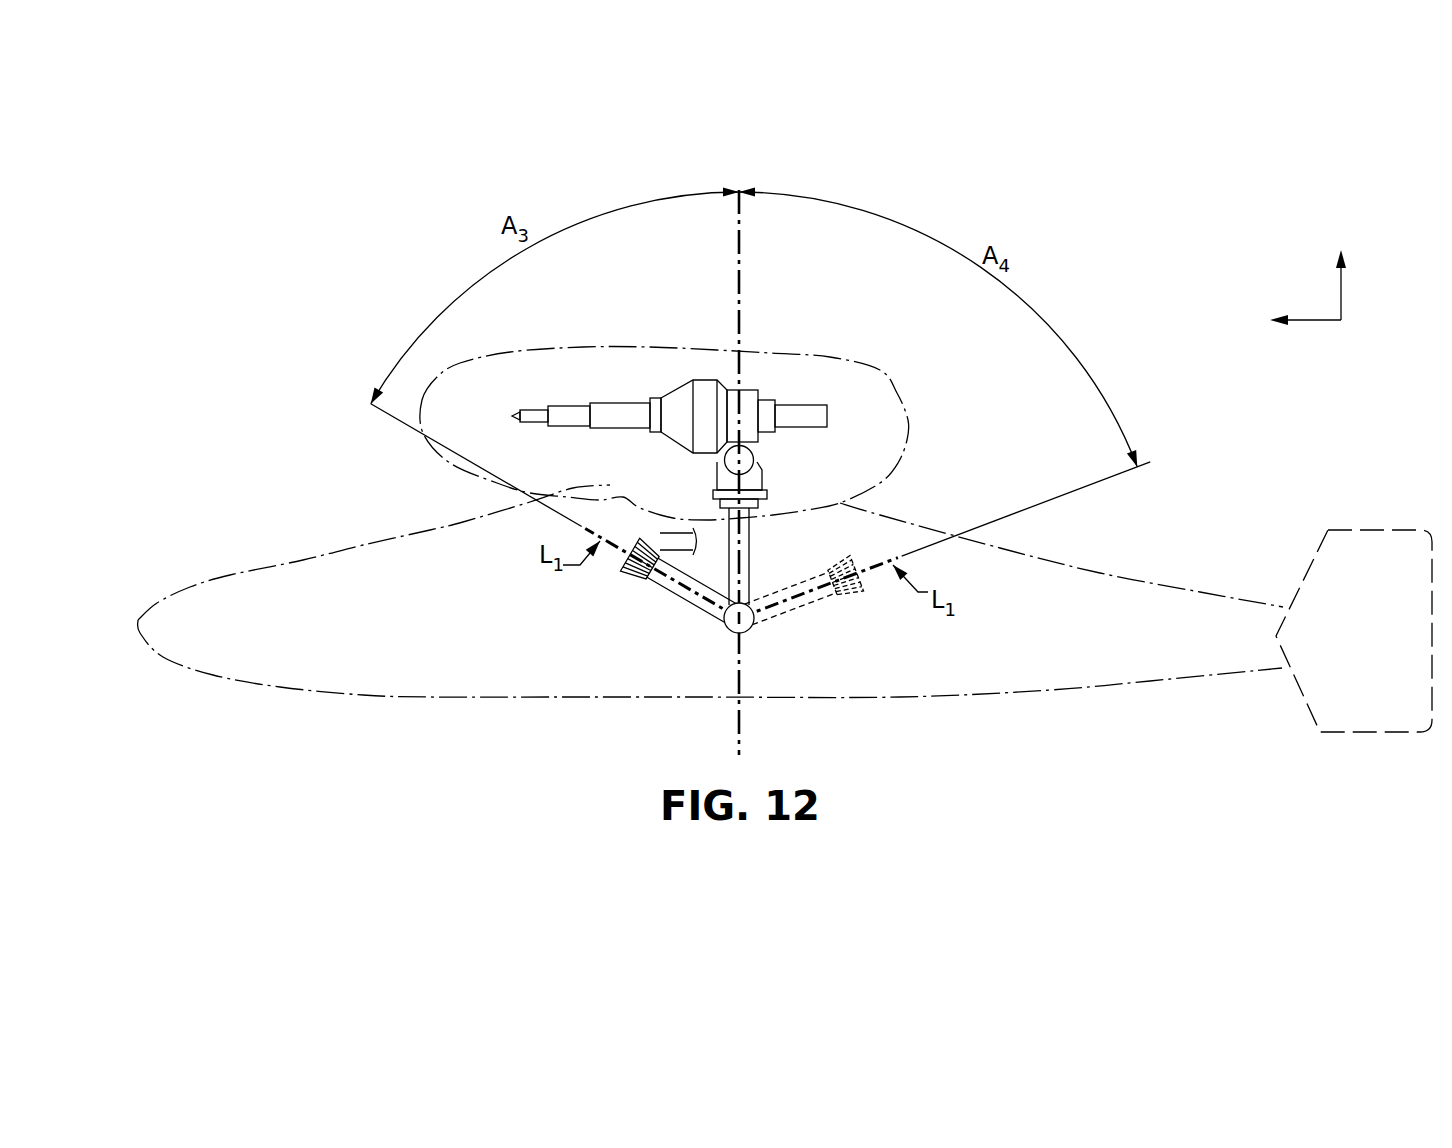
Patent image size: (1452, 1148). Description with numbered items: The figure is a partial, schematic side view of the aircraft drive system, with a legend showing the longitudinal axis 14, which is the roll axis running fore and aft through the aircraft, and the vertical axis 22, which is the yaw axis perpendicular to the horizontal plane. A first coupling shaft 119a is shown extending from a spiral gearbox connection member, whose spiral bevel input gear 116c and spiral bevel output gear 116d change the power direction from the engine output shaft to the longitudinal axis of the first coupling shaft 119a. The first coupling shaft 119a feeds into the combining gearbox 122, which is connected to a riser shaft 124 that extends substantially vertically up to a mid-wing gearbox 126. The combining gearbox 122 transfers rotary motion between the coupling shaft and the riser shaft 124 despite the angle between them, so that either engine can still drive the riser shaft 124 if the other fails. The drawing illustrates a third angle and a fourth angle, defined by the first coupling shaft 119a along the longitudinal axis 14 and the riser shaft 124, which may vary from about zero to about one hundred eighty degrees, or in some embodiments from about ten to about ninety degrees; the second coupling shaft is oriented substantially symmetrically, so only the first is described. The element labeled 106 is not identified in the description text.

The tool orientation line 106 is at (409, 436).
The spiral bevel input gear 116c is at (645, 532).
The spiral bevel output gear 116d is at (632, 571).
The first coupling shaft 119a is at (690, 608).
The combining gearbox 122 is at (744, 632).
The riser shaft 124 is at (750, 554).
The mid-wing gearbox 126 is at (758, 466).
The vertical axis Z 22 is at (1343, 293).
The longitudinal axis X 14 is at (1313, 322).